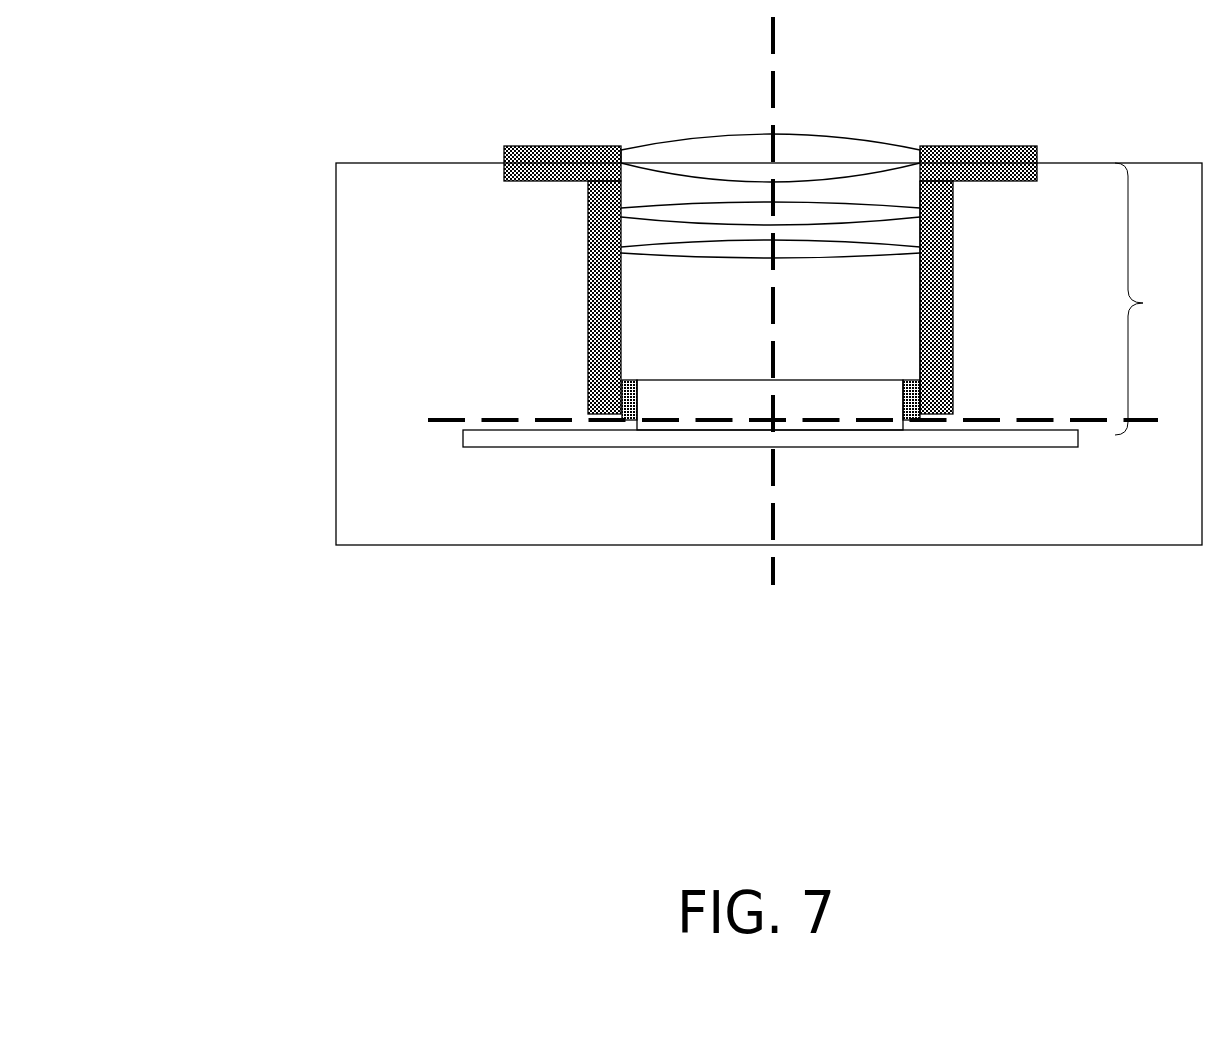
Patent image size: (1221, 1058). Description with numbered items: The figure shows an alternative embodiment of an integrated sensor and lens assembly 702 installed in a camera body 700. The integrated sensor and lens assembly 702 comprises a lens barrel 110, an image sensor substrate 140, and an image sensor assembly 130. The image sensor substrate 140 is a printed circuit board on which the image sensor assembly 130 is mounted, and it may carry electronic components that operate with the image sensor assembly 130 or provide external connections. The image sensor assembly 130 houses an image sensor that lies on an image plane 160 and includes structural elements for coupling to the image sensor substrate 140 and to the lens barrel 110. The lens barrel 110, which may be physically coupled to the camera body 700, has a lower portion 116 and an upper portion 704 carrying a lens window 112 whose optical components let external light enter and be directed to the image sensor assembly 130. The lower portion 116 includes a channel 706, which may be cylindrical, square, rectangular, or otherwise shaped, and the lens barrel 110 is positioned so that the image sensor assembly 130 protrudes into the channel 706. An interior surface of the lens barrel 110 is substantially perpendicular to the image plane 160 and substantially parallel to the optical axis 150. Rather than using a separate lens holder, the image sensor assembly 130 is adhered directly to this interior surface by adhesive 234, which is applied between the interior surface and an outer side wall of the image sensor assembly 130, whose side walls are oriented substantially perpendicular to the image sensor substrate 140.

The lens barrel 110 is at (519, 146).
The lens window 112 is at (680, 137).
The lower portion 116 is at (602, 297).
The image sensor assembly 130 is at (637, 420).
The image sensor substrate 140 is at (463, 434).
The optical axis 150 is at (777, 87).
The image plane 160 is at (1040, 422).
The adhesive 234 is at (919, 380).
The camera body 700 is at (336, 308).
The integrated sensor and lens assembly 702 is at (1153, 299).
The upper portion 704 is at (968, 170).
The channel 706 is at (905, 283).